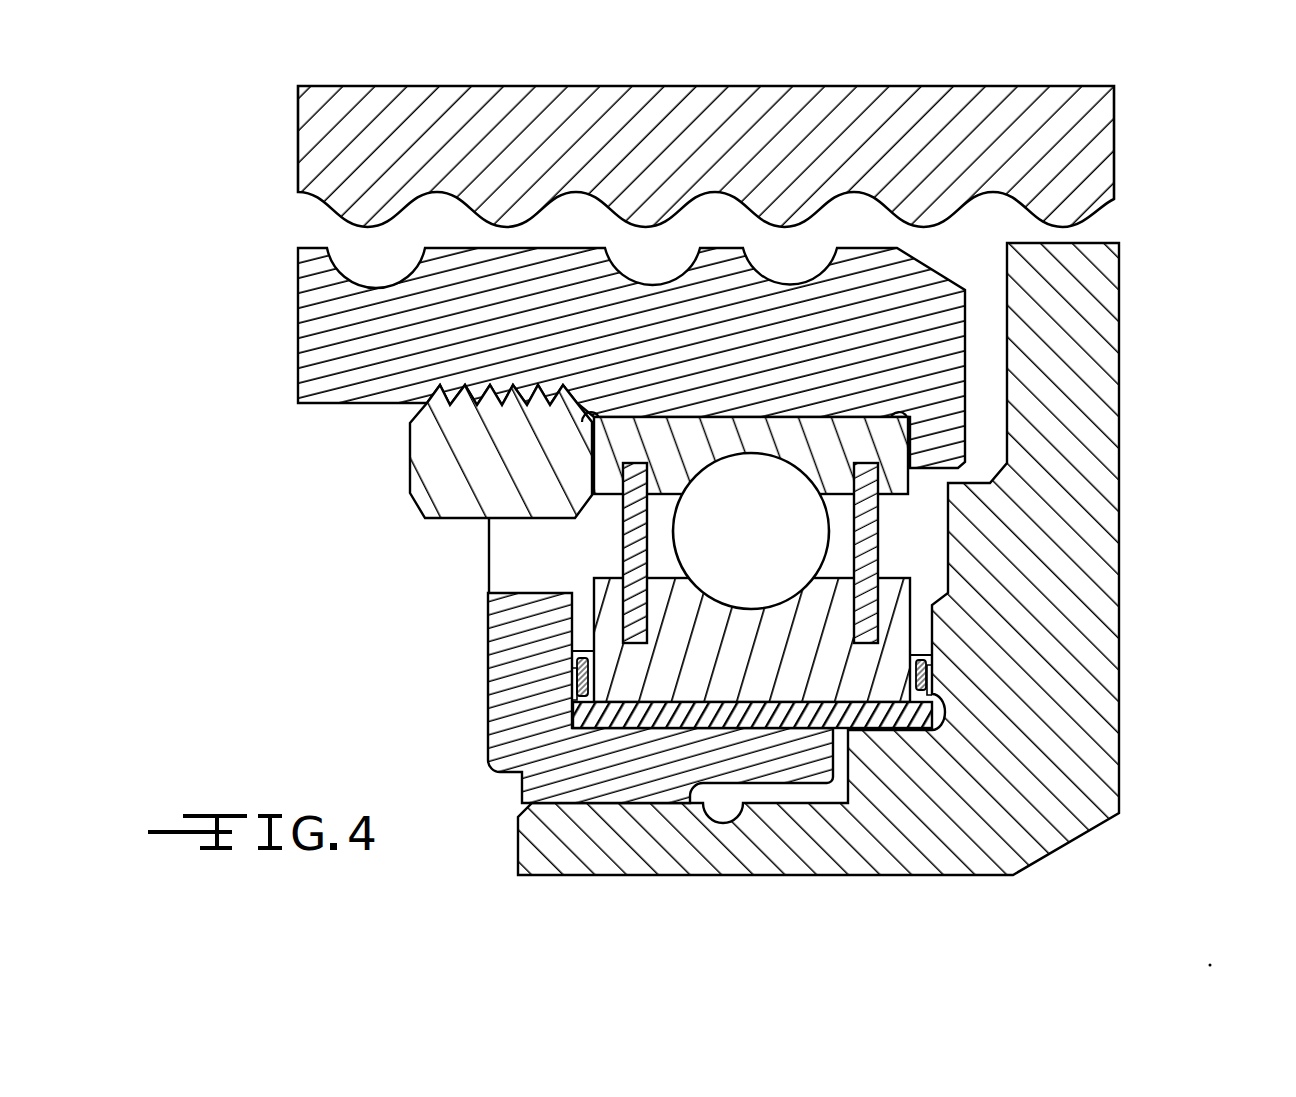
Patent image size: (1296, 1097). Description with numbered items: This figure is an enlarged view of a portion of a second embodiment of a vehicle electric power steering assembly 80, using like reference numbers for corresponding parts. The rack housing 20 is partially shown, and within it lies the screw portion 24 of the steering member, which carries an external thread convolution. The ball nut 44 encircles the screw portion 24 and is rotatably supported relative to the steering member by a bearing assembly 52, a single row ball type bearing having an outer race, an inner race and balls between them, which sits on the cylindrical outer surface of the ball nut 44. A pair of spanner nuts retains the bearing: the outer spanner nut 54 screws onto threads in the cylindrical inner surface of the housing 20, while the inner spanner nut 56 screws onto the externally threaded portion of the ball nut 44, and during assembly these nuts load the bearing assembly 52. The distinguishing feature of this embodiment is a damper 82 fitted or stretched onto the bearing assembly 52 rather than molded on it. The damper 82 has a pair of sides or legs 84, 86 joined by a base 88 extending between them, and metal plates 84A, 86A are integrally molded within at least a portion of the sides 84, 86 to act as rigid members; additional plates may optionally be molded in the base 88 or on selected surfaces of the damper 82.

The rack housing 20 is at (1122, 491).
The screw portion 24 is at (1085, 163).
The ball nut 44 is at (342, 372).
The bearing assembly 52 is at (763, 409).
The outer spanner nut 54 is at (495, 736).
The inner spanner nut 56 is at (412, 497).
The vehicle electric power steering assembly 80 is at (1168, 678).
The damper 82 is at (890, 742).
The side 84 is at (577, 670).
The metal plate 84A is at (575, 683).
The side 86 is at (930, 668).
The metal plate 86A is at (928, 678).
The base 88 is at (650, 724).